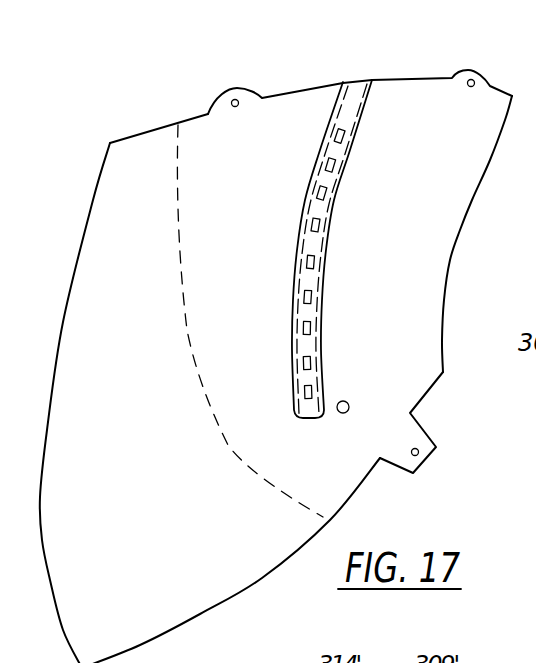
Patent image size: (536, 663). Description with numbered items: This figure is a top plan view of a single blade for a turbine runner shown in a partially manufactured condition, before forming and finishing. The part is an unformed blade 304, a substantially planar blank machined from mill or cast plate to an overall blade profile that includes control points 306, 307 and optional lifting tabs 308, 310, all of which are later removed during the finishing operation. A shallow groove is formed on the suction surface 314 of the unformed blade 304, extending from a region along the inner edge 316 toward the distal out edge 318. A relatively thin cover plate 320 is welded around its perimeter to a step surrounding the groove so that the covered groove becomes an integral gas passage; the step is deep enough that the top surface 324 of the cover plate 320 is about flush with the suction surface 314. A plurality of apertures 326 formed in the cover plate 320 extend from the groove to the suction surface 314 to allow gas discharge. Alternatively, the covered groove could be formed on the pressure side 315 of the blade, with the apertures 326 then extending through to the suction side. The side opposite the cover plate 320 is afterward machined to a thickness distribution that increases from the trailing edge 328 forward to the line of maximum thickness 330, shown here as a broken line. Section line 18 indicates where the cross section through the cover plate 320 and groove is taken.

The section line 18- 18 is at (292, 221).
The unformed blade 304 is at (357, 526).
The control point 306 is at (415, 474).
The control point 307 is at (349, 404).
The lifting tab 308 is at (478, 72).
The lifting tab 310 is at (237, 88).
The suction surface 314 is at (265, 179).
The pressure side 315 is at (440, 228).
The inner edge 316 is at (142, 133).
The distal out edge 318 is at (235, 598).
The cover plate 320 is at (354, 102).
The top surface 324 is at (367, 82).
The apertures 326 is at (308, 297).
The trailing edge 328 is at (63, 322).
The line of maximum thickness 330 is at (190, 330).